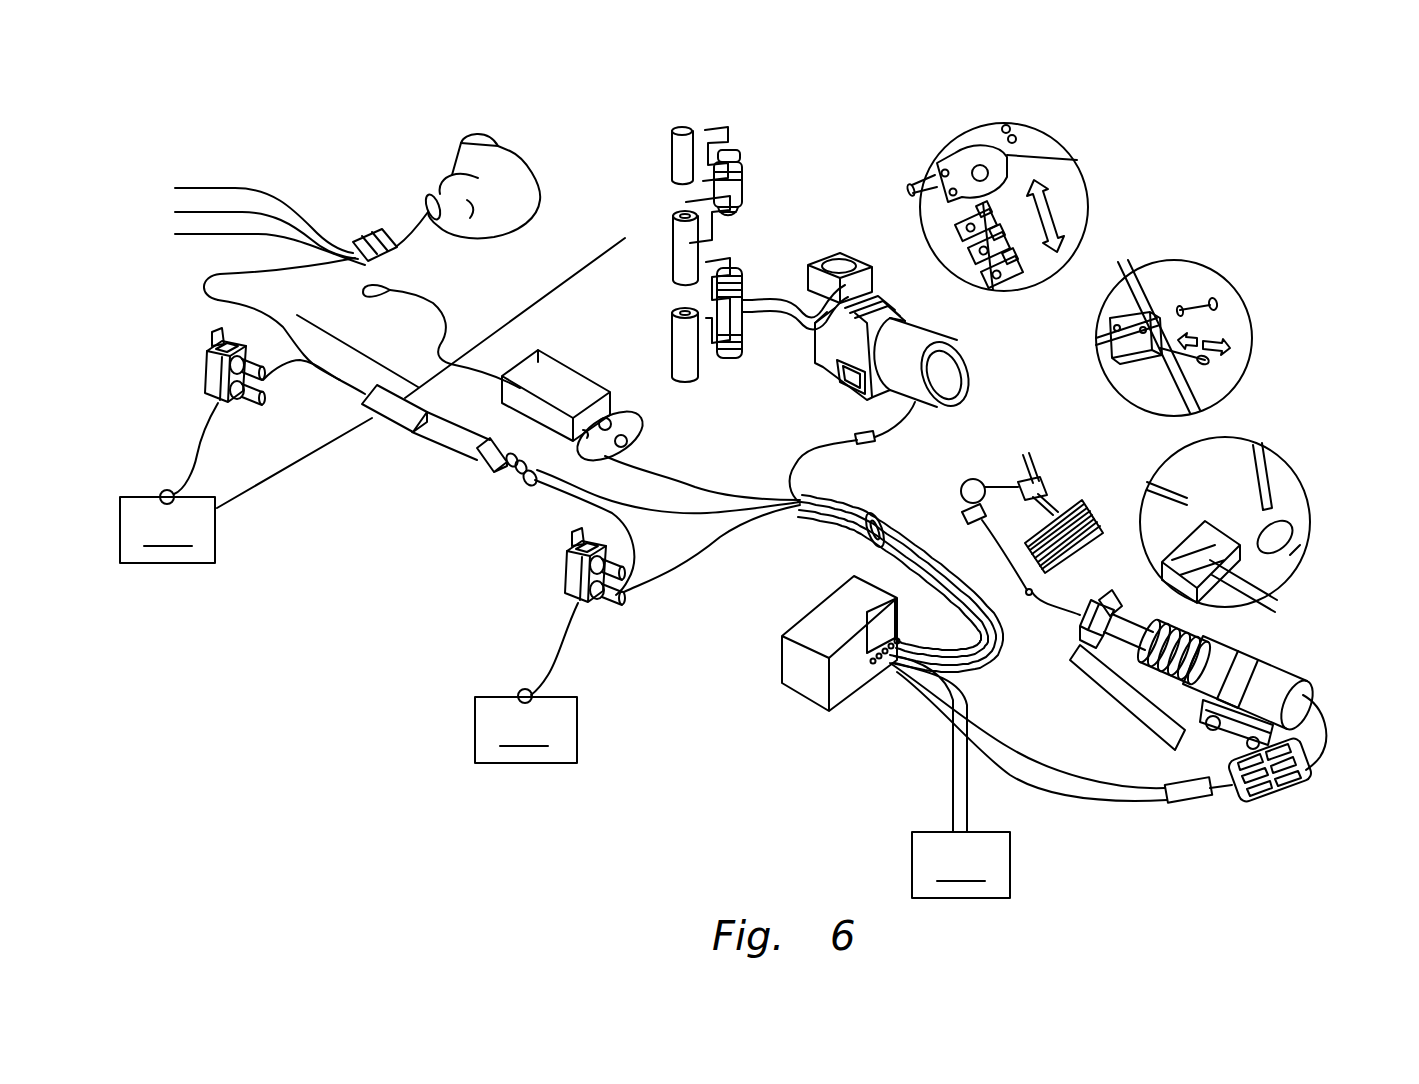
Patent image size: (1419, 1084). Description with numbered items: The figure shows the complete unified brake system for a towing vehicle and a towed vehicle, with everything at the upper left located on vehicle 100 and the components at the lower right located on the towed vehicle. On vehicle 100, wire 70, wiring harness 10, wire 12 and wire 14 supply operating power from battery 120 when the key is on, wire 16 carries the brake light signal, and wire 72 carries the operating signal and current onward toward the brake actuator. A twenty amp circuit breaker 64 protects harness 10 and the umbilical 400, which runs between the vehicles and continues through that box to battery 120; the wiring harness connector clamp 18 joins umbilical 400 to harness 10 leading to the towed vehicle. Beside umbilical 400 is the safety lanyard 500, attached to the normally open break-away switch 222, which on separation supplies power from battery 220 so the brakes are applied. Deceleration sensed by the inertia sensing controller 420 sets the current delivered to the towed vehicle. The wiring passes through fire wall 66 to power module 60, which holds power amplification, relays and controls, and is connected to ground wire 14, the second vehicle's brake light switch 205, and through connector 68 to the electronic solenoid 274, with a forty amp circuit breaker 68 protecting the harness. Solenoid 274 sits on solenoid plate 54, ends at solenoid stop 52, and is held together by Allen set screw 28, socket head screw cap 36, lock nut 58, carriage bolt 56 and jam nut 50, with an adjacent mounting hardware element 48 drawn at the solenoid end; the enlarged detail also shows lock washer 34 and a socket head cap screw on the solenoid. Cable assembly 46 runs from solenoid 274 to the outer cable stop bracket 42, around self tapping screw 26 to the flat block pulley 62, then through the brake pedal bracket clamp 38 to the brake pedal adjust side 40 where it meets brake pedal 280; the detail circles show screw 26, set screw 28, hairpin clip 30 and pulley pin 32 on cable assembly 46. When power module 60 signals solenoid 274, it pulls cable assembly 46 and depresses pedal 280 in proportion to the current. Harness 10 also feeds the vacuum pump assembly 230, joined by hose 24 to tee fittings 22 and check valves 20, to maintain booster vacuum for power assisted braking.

The wiring harness 10 is at (324, 196).
The wire 12 is at (242, 213).
The wire 14 is at (833, 803).
The wire 16 is at (248, 242).
The wiring harness connector clamp 18 is at (474, 428).
The check valves 20 is at (760, 176).
The tee fittings 22 is at (767, 256).
The hose 24 is at (777, 317).
The self tapping screw 26 is at (993, 287).
The Allen set screw 28 is at (962, 490).
The hairpin clip 30 is at (920, 177).
The pulley pin 32 is at (1017, 132).
The lock washer 34 is at (1183, 310).
The socket head screw cap 36 is at (1217, 304).
The brake pedal bracket clamp 38 is at (1067, 468).
The brake pedal adjust side 40 is at (1023, 497).
The outer cable stop bracket 42 is at (962, 518).
The cable assembly 46 is at (1045, 597).
The block 48 is at (1112, 600).
The jam nut 50 is at (1137, 628).
The solenoid stop 52 is at (1080, 617).
The solenoid plate 54 is at (1127, 683).
The carriage bolt 56 is at (1190, 727).
The lock nut 58 is at (1227, 747).
The power module 60 is at (793, 693).
The flat block pulley 62 is at (971, 479).
The circuit breaker 64 is at (207, 345).
The fire wall 66 is at (868, 516).
The circuit breaker / connector 68 is at (1190, 807).
The wire 70 is at (531, 477).
The wire 72 is at (482, 385).
The vehicle 100 is at (421, 366).
The battery 120 is at (167, 526).
The brake light switch 205 is at (950, 776).
The battery 220 is at (550, 645).
The break-away switch 222 is at (573, 345).
The vacuum pump assembly 230 is at (838, 377).
The solenoid 274 is at (1253, 637).
The brake pedal 280 is at (1097, 507).
The umbilical 400 is at (493, 480).
The inertia sensing controller 420 is at (505, 152).
The lanyard 500 is at (462, 280).